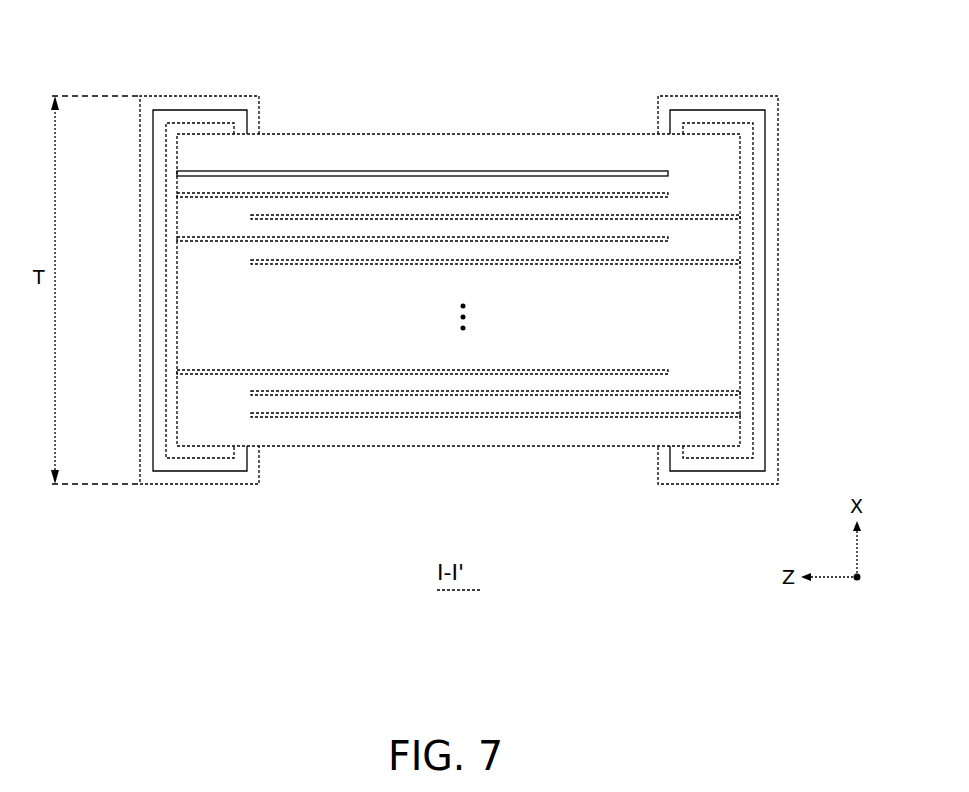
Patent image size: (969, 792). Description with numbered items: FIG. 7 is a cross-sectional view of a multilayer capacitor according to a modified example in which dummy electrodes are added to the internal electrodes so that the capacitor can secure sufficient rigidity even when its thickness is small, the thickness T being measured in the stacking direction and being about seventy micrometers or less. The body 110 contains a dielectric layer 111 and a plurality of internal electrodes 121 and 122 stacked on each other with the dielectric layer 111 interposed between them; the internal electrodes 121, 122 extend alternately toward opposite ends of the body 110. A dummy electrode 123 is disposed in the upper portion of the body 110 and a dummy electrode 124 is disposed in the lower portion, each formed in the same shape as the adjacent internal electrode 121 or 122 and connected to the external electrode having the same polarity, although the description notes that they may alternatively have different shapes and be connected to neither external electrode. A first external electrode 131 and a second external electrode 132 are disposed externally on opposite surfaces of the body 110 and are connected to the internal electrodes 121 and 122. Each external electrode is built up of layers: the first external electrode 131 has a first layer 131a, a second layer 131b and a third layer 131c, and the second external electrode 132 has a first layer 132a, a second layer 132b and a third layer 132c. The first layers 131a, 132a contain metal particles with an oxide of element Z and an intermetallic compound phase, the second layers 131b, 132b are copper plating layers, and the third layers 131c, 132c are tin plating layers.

The body 110 is at (490, 126).
The dielectric layer 111 is at (557, 208).
The internal electrode 121 is at (296, 193).
The internal electrode 122 is at (355, 215).
The dummy electrode 123 is at (424, 172).
The dummy electrode 124 is at (418, 418).
The first external electrode 131 is at (162, 253).
The first layer 131a is at (172, 348).
The second layer 131b is at (158, 320).
The third layer 131c is at (146, 292).
The second external electrode 132 is at (753, 253).
The first layer 132a is at (746, 348).
The second layer 132b is at (760, 320).
The third layer 132c is at (772, 291).